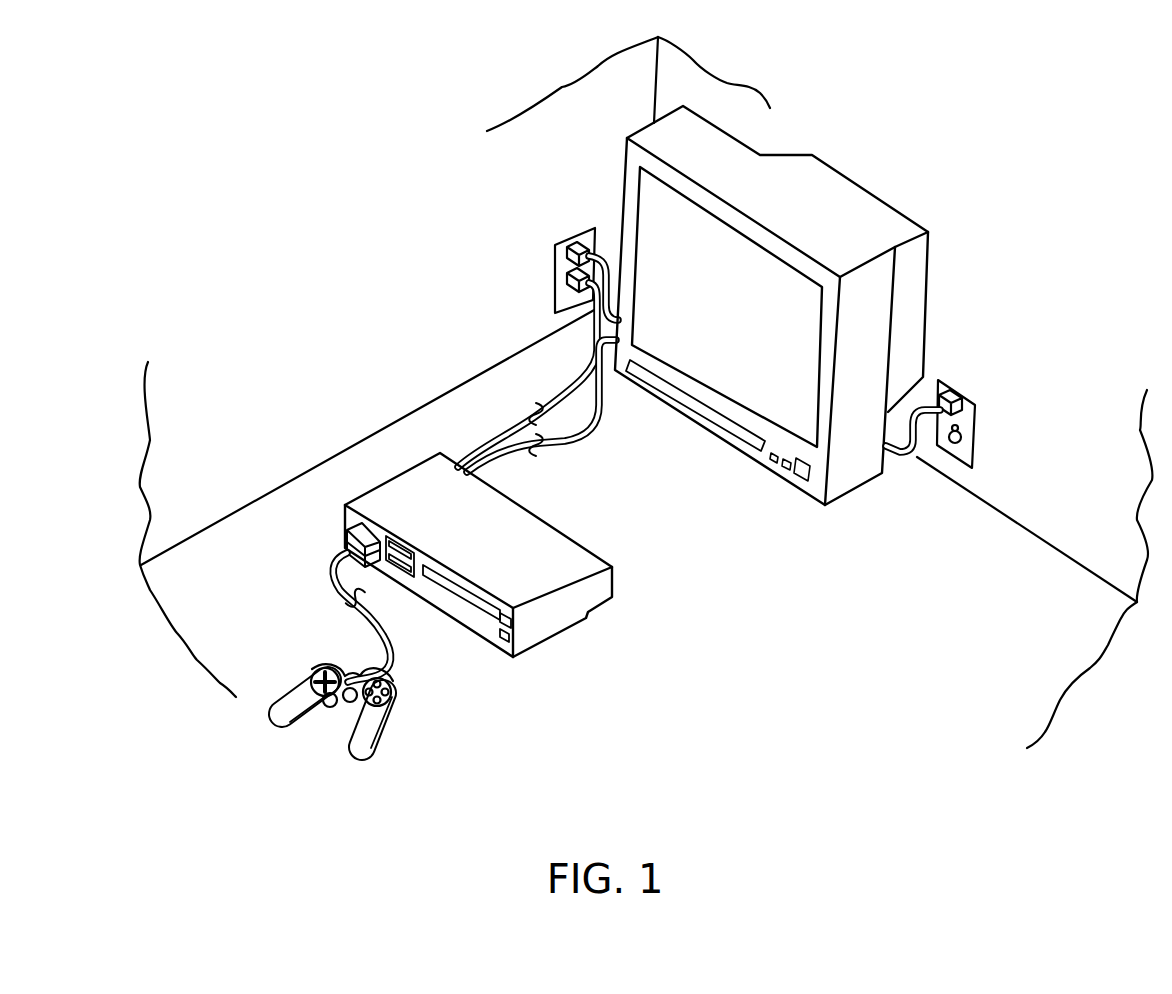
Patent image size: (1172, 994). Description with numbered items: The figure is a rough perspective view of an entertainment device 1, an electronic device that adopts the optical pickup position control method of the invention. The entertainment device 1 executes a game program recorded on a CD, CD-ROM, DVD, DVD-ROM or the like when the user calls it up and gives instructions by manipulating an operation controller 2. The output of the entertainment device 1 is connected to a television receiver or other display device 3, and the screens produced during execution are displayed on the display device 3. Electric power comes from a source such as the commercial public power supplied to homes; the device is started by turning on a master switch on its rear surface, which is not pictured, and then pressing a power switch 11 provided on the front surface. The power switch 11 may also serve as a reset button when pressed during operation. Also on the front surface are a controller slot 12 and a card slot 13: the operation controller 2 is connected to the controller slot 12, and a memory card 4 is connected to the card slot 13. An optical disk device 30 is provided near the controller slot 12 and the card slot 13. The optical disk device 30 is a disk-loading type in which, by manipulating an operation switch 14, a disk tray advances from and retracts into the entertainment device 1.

The entertainment device 1 is at (468, 516).
The operation controller 2 is at (291, 698).
The display device 3 is at (844, 181).
The memory card 4 is at (348, 533).
The power switch 11 is at (506, 615).
The controller slot 12 is at (410, 578).
The card slot 13 is at (397, 548).
The operation switch 14 is at (500, 643).
The optical disk device 30 is at (467, 605).